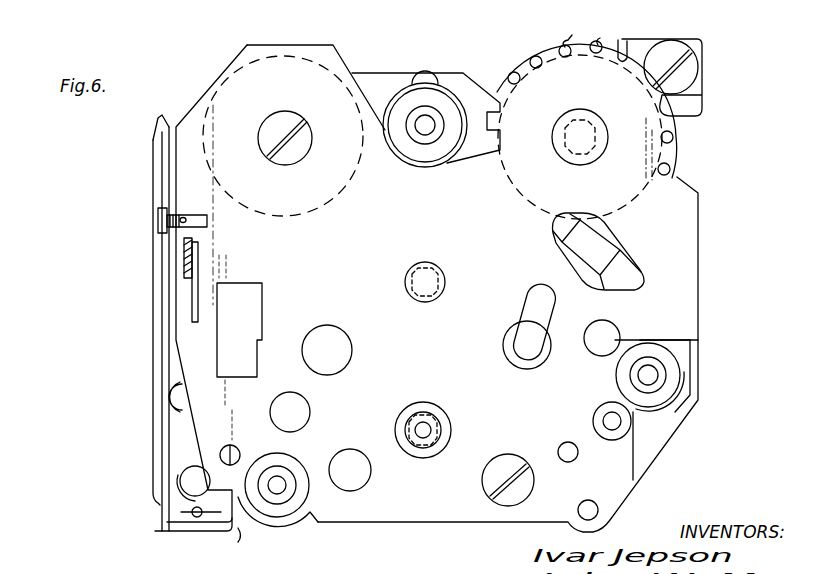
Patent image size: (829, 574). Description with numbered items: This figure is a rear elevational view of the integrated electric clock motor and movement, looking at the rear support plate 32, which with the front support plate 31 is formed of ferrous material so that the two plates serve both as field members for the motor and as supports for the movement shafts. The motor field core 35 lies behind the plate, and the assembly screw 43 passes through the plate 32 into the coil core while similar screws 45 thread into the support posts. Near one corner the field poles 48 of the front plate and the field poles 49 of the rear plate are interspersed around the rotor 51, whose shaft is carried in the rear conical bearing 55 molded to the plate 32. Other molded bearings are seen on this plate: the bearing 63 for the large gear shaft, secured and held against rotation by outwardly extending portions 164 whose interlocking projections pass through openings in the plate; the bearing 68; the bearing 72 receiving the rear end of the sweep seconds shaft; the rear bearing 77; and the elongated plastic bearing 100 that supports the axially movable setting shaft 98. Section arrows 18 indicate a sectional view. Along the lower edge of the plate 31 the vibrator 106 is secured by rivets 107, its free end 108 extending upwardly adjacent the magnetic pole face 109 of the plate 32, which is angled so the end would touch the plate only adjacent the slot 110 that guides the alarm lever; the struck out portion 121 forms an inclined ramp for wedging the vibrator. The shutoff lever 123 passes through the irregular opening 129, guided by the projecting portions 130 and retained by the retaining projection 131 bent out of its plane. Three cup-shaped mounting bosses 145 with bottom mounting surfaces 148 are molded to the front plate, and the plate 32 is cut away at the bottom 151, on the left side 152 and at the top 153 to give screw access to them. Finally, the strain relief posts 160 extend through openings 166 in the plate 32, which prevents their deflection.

The section line 18 is at (450, 230).
The front support plate 31 is at (232, 540).
The rear support plate 32 is at (680, 240).
The motor field core 35 is at (238, 70).
The assembly screw 43 is at (290, 120).
The screws 45 is at (666, 56).
The field poles 48 is at (598, 44).
The field poles 49 is at (548, 58).
The rotor 51 is at (510, 184).
The rear conical bearing 55 is at (582, 150).
The bearing 63 is at (620, 240).
The bearing 68 is at (540, 362).
The bearing 72 is at (430, 278).
The rear bearing 77 is at (350, 356).
The axially movable shaft 98 is at (423, 425).
The elongated plastic bearing 100 is at (446, 428).
The vibrator 106 is at (160, 312).
The rivets 107 is at (183, 474).
The free end 108 is at (163, 182).
The magnetic pole face 109 is at (168, 237).
The slot 110 is at (180, 215).
The struck out portion 121 is at (160, 218).
The shutoff lever 123 is at (186, 255).
The opening 129 is at (198, 268).
The projecting portions 130 is at (200, 246).
The retaining projection 131 is at (190, 286).
The mounting bosses 145 is at (407, 84).
The bottom mounting surface 148 is at (445, 103).
The cut away portion 151 is at (310, 527).
The cut away portion 152 is at (690, 342).
The cut away portion 153 is at (364, 95).
The elongated posts 160 is at (572, 458).
The outwardly extending portions 164 is at (615, 273).
The openings 166 is at (582, 512).